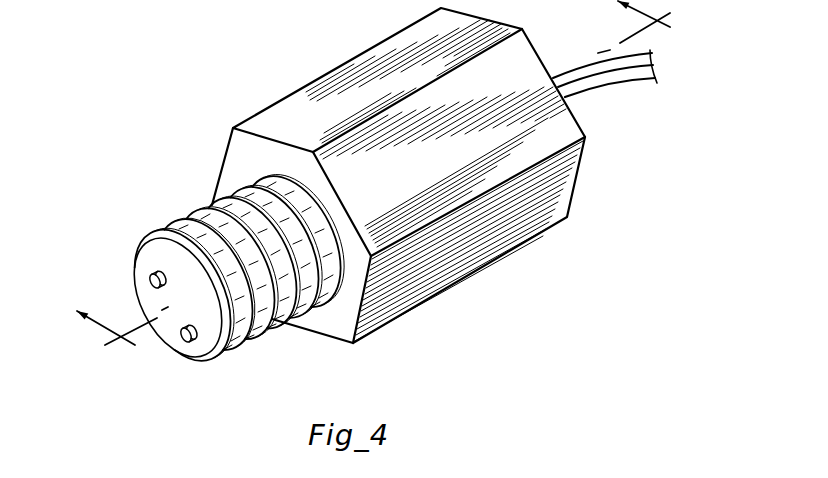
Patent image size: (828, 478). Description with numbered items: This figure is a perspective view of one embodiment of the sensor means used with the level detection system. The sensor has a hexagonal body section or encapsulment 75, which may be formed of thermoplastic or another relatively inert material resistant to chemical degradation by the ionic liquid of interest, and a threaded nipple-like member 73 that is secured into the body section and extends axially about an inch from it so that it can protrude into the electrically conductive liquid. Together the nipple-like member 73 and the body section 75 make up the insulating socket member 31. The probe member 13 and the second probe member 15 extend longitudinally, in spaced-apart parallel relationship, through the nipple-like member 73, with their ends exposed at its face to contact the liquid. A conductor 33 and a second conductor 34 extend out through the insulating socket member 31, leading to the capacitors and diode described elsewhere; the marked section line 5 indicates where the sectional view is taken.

The insulating socket member 31 is at (398, 173).
The body section 75 is at (300, 103).
The nipple-like member 73 is at (212, 203).
The conductor 33 is at (574, 74).
The second conductor 34 is at (600, 86).
The second probe member 15 is at (147, 283).
The probe member 13 is at (183, 342).
The section line 5- 5 is at (381, 184).